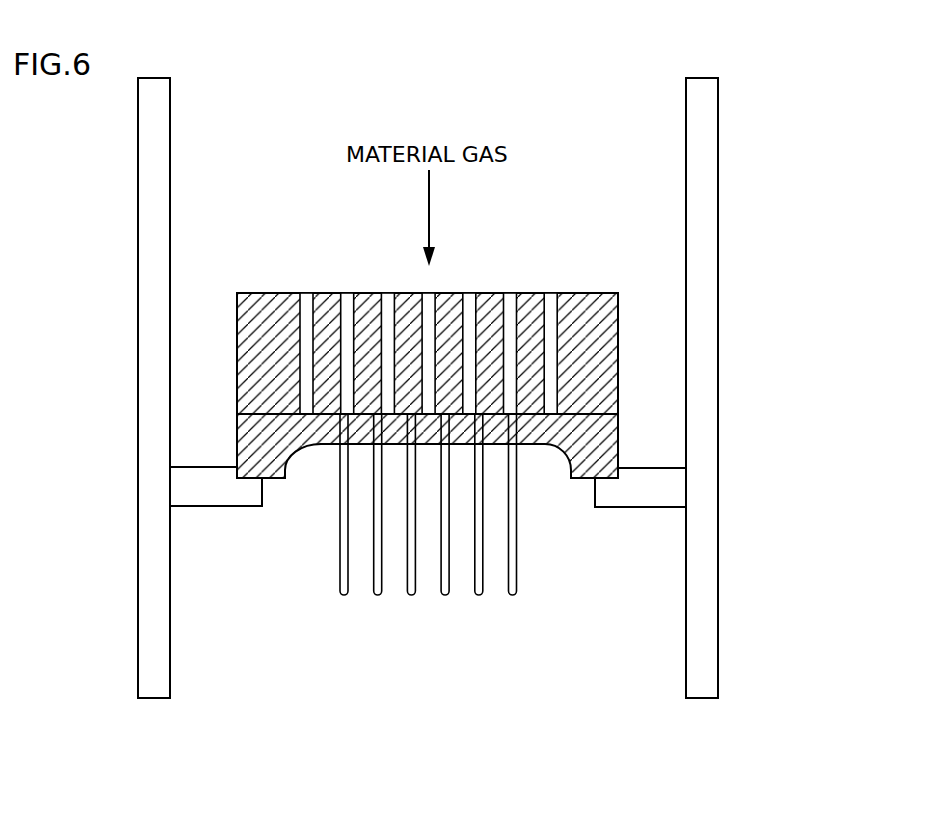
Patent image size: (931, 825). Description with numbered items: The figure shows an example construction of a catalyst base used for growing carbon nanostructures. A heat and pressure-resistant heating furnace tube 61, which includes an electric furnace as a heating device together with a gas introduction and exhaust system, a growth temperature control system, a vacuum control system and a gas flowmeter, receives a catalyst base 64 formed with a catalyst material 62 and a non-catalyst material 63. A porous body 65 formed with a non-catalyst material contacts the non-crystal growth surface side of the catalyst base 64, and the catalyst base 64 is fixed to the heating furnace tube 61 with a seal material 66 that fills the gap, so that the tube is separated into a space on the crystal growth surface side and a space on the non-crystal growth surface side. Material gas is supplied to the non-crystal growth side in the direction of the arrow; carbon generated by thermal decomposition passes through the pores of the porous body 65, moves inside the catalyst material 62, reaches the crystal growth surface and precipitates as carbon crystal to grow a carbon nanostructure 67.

The heat and pressure-resistant heating furnace tube 61 is at (150, 220).
The catalyst material 62 is at (519, 434).
The non-catalyst material 63 is at (548, 435).
The catalyst base 64 is at (427, 497).
The porous body 65 is at (609, 343).
The seal material 66 is at (208, 490).
The carbon nanostructure 67 is at (343, 578).